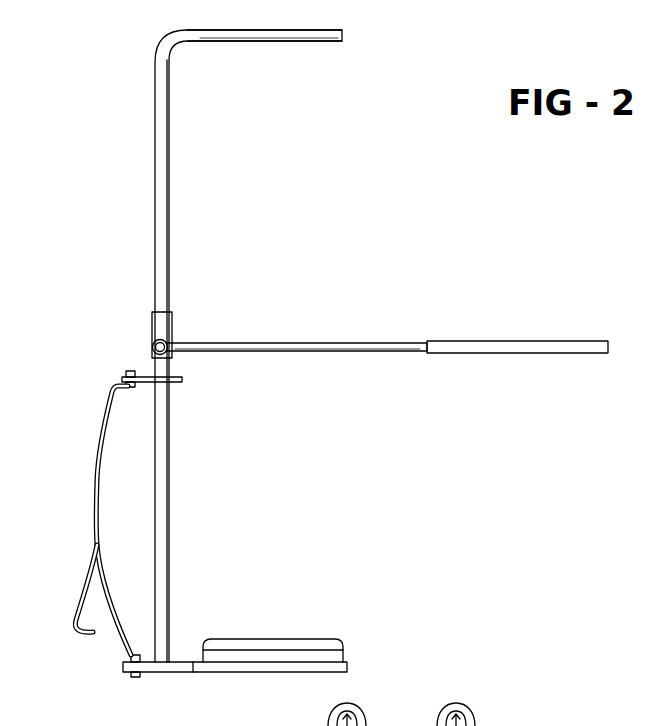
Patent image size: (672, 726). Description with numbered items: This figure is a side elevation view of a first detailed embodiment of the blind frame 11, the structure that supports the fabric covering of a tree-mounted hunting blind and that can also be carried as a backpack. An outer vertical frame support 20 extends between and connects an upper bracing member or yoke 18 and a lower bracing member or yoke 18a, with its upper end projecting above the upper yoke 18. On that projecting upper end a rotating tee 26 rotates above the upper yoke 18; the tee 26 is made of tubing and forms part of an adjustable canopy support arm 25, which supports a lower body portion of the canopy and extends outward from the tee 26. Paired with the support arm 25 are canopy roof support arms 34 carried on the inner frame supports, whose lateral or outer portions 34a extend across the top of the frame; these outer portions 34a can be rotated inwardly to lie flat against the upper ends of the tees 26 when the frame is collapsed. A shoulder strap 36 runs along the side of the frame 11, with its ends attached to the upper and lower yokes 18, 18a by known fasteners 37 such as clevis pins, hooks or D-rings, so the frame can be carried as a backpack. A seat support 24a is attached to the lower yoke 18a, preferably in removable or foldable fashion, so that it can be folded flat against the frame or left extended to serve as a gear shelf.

The frame 11 is at (108, 179).
The outer vertical frame support 20 is at (165, 498).
The lateral or outer portion of roof support arm 34a is at (318, 41).
The rotating tee 26 is at (152, 326).
The canopy support arm 25 is at (332, 342).
The upper bracing member or yoke 18 is at (180, 383).
The fastener 37 is at (128, 375).
The shoulder strap 36 is at (95, 490).
The lower bracing member or yoke 18a is at (178, 657).
The seat support 24a is at (346, 662).
The canopy roof support arm 34 is at (452, 704).